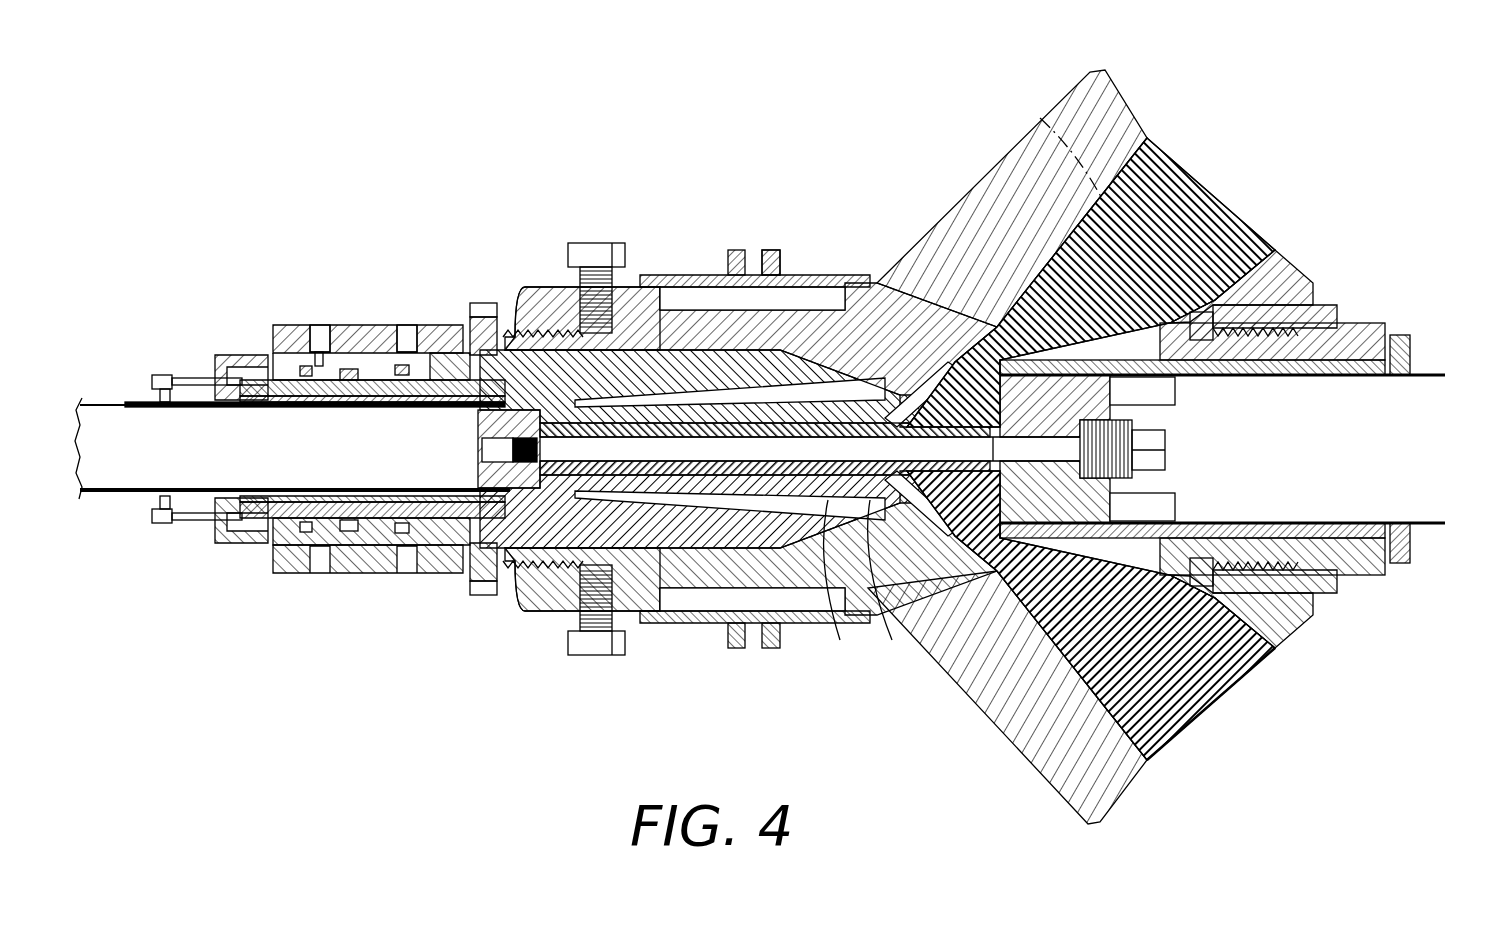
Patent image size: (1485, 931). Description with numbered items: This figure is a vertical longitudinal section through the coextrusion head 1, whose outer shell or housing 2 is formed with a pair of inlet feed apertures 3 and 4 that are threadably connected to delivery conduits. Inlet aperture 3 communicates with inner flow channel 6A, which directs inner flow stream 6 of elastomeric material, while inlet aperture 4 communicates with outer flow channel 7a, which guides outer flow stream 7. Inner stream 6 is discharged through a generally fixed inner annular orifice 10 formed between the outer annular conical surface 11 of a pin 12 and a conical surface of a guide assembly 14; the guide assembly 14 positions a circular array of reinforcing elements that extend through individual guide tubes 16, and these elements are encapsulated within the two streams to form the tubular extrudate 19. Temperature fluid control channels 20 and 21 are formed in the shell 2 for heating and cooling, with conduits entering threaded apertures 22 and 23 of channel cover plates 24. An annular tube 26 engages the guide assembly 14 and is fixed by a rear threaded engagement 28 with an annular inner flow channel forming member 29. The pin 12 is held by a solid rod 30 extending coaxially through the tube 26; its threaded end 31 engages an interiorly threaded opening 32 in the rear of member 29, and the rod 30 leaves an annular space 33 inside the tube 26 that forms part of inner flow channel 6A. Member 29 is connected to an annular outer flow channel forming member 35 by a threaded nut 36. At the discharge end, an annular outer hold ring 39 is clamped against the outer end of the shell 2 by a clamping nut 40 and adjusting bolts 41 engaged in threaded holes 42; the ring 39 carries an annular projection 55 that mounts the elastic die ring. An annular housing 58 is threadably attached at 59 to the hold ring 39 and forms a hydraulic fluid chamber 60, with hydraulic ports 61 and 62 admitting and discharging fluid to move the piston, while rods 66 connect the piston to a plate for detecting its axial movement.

The coextrusion head 1 is at (885, 210).
The outer shell or housing 2 is at (985, 245).
The inlet feed aperture 3 is at (1190, 172).
The inlet feed aperture 4 is at (1295, 600).
The inner flow stream 6 is at (1225, 195).
The inner flow channel 6A is at (1040, 130).
The outer flow stream 7 is at (1245, 695).
The outer flow channel 7a is at (1210, 740).
The inner annular orifice 10 is at (490, 418).
The outer annular conical surface 11 is at (492, 452).
The pin 12 is at (493, 483).
The guide assembly 14 is at (668, 370).
The guide tubes 16 is at (975, 570).
The tubular extrudate 19 is at (153, 510).
The temperature fluid control channel 20 is at (820, 297).
The temperature fluid control channel 21 is at (700, 600).
The threaded aperture 22 is at (737, 273).
The threaded aperture 23 is at (745, 618).
The channel cover plates 24 is at (772, 297).
The annular tube 26 is at (855, 495).
The rear threaded engagement 28 is at (880, 495).
The inner flow channel forming member 29 is at (1100, 390).
The solid rod 30 is at (1100, 493).
The threaded end 31 is at (1140, 453).
The interiorly threaded opening 32 is at (1140, 428).
The annular space 33 is at (775, 455).
The outer flow channel forming member 35 is at (1360, 330).
The threaded nut 36 is at (1415, 340).
The outer hold ring 39 is at (497, 330).
The clamping nut 40 is at (490, 580).
The adjusting bolts 41 is at (600, 255).
The threaded holes 42 is at (555, 602).
The annular projection 55 is at (562, 340).
The annular housing 58 is at (362, 340).
The threaded attachment 59 is at (423, 563).
The hydraulic fluid chamber 60 is at (345, 560).
The hydraulic port 61 is at (318, 345).
The hydraulic port 62 is at (405, 345).
The rods 66 is at (215, 378).